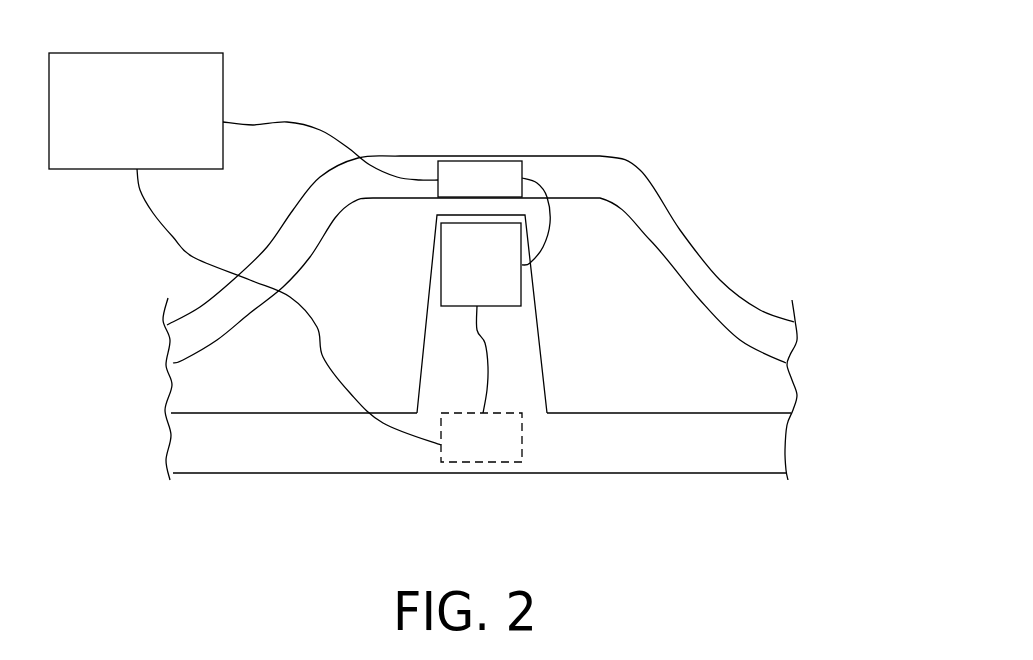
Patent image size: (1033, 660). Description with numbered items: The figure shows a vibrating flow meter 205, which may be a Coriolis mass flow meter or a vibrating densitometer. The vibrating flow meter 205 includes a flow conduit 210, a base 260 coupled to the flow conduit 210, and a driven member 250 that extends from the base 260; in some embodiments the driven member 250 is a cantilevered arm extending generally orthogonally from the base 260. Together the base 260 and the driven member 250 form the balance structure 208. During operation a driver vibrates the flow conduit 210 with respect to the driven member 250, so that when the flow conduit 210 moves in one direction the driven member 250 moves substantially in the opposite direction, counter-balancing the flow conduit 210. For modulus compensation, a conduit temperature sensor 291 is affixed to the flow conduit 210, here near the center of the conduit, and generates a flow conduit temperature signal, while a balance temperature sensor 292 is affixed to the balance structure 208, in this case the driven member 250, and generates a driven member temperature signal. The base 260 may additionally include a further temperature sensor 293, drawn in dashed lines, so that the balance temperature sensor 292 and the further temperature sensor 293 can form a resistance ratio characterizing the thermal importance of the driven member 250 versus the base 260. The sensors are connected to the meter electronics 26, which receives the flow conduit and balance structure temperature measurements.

The meter electronics 26 is at (121, 150).
The vibrating flow meter 205 is at (637, 70).
The balance structure 208 is at (357, 505).
The flow conduit 210 is at (660, 192).
The driven member 250 is at (535, 305).
The base 260 is at (627, 473).
The conduit temperature sensor T1 291 is at (523, 170).
The balance temperature sensor T2 292 is at (441, 277).
The temperature sensor T3 293 is at (495, 462).